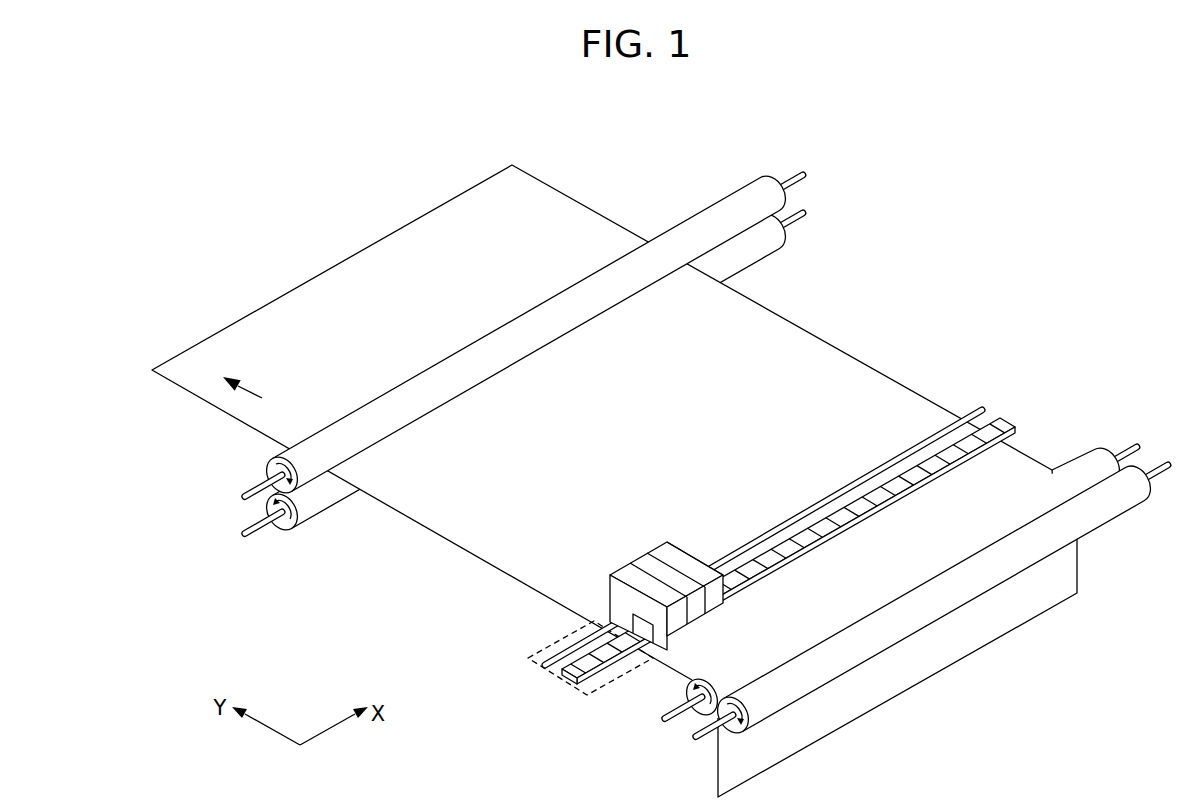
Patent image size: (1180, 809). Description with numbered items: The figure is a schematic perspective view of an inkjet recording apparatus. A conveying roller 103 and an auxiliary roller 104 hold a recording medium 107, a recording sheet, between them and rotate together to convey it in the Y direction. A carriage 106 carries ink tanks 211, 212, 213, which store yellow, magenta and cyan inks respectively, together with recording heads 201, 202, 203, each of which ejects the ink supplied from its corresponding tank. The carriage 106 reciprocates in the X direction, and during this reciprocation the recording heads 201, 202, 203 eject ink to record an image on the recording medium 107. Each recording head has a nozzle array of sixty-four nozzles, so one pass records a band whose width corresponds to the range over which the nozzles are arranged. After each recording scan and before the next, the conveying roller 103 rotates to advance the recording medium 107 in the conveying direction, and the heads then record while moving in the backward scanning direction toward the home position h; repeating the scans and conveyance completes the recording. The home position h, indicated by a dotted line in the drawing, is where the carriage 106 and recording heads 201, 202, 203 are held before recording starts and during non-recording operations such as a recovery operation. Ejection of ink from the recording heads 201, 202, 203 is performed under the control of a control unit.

The conveying roller 103 is at (742, 192).
The auxiliary roller 104 is at (758, 245).
The carriage 106 is at (712, 620).
The recording medium 107 is at (455, 208).
The recording head 201 is at (588, 636).
The recording head 202 is at (588, 662).
The recording head 203 is at (627, 640).
The ink tank 211 is at (630, 562).
The ink tank 212 is at (647, 553).
The ink tank 213 is at (662, 550).
The home position h is at (603, 677).